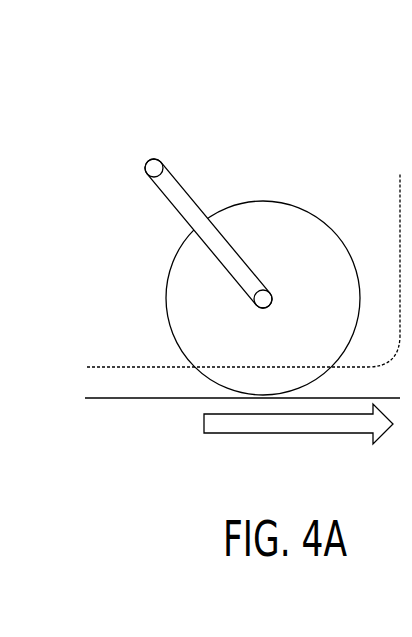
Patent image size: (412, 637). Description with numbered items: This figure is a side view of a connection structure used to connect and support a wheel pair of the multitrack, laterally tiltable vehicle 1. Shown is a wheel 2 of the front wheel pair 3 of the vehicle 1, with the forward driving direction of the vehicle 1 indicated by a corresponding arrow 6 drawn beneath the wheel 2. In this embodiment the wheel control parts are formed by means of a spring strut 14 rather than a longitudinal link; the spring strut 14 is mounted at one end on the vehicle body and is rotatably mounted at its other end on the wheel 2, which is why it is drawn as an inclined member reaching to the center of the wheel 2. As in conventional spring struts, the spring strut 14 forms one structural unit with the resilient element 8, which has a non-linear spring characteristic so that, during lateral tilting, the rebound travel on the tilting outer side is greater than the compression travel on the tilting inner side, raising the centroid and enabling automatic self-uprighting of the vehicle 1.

The vehicle 1 is at (108, 103).
The wheel 2 is at (220, 373).
The front wheel pair 3 is at (343, 174).
The arrow 6 is at (290, 434).
The resilient element 8 is at (178, 188).
The spring strut 14 is at (205, 218).